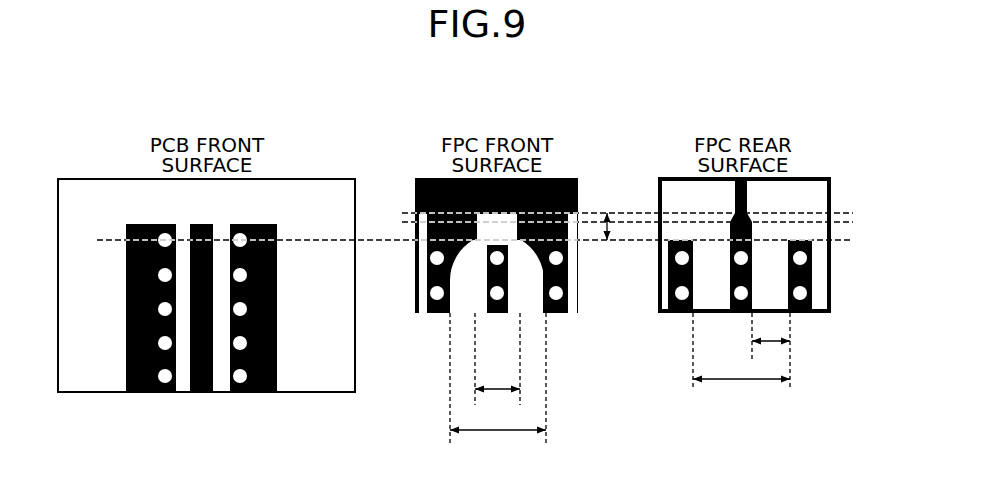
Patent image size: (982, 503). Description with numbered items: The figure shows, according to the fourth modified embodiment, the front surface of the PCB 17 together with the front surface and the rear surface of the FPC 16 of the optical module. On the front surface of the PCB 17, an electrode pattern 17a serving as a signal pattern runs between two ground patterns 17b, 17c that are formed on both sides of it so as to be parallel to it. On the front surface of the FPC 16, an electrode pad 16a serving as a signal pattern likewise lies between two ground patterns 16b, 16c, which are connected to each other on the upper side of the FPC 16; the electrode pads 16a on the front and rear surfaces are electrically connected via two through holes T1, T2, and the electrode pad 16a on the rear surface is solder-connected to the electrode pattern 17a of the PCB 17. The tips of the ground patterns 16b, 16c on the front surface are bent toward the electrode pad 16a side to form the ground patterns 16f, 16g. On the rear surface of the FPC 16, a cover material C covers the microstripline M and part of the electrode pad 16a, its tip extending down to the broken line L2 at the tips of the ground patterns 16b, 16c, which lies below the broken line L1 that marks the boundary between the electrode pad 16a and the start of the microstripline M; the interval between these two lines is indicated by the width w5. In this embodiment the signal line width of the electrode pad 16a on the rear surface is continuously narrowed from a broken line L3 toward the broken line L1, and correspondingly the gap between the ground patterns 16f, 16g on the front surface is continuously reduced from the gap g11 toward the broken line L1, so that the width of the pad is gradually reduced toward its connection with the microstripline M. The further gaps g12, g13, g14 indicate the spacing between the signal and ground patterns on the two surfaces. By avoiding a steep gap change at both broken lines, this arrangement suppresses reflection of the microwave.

The FPC 16 is at (578, 284).
The electrode pad 16a is at (497, 313).
The ground pattern 16b is at (437, 313).
The ground pattern 16c is at (556, 313).
The ground pattern 16f is at (452, 228).
The ground pattern 16g is at (547, 228).
The PCB 17 is at (297, 178).
The electrode pattern 17a is at (202, 393).
The ground pattern 17b is at (153, 393).
The ground pattern 17c is at (252, 393).
The through hole T1 is at (497, 293).
The through hole T2 is at (741, 258).
The microstripline M is at (735, 196).
The cover material C is at (797, 178).
The broken line L1 is at (838, 213).
The broken line L2 is at (838, 240).
The broken line L3 is at (842, 222).
The width between L1 and L2 w5 is at (610, 224).
The gap g11 is at (497, 366).
The gap g12 is at (498, 385).
The gap g13 is at (771, 350).
The gap g14 is at (741, 359).